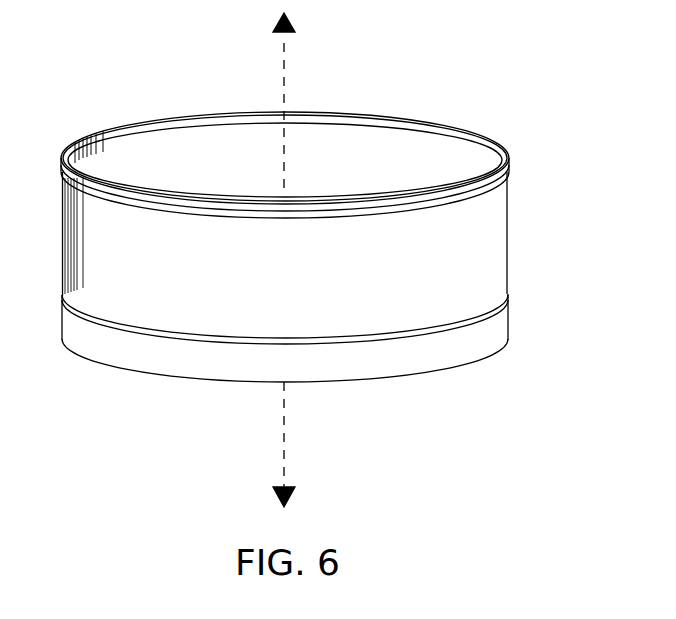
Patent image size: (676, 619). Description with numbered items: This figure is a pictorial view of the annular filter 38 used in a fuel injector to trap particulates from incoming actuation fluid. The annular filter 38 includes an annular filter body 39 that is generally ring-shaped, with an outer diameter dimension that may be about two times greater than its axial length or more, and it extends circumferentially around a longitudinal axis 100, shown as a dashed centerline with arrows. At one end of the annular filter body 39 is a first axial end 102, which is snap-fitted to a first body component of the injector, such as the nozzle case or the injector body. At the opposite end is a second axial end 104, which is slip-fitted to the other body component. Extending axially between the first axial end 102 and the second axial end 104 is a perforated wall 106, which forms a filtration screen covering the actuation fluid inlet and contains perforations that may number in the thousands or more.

The annular filter 38 is at (497, 86).
The annular filter body 39 is at (511, 146).
The longitudinal axis 100 is at (285, 447).
The first axial end 102 is at (510, 164).
The second axial end 104 is at (509, 325).
The perforated wall 106 is at (508, 222).